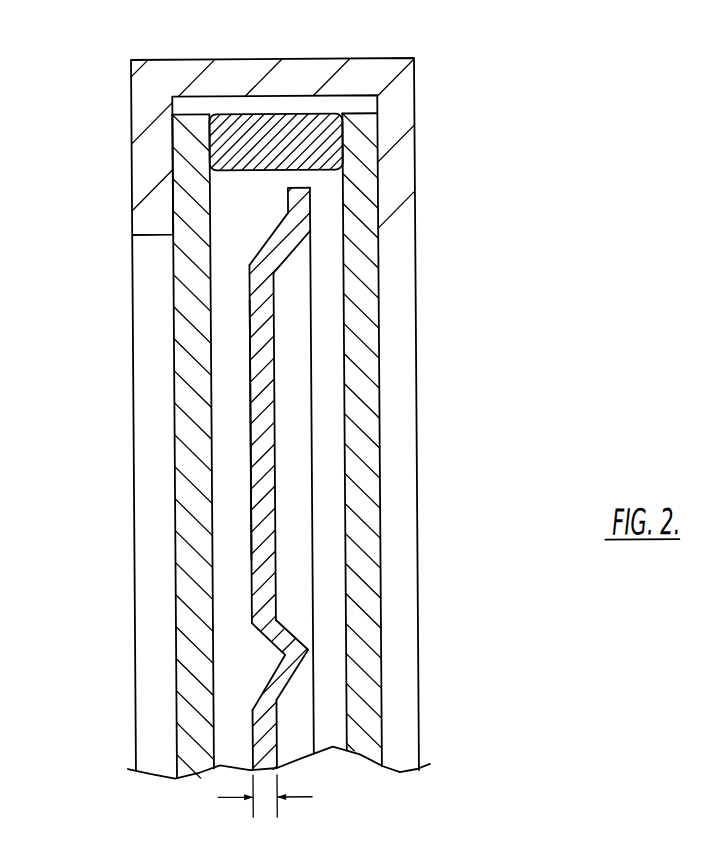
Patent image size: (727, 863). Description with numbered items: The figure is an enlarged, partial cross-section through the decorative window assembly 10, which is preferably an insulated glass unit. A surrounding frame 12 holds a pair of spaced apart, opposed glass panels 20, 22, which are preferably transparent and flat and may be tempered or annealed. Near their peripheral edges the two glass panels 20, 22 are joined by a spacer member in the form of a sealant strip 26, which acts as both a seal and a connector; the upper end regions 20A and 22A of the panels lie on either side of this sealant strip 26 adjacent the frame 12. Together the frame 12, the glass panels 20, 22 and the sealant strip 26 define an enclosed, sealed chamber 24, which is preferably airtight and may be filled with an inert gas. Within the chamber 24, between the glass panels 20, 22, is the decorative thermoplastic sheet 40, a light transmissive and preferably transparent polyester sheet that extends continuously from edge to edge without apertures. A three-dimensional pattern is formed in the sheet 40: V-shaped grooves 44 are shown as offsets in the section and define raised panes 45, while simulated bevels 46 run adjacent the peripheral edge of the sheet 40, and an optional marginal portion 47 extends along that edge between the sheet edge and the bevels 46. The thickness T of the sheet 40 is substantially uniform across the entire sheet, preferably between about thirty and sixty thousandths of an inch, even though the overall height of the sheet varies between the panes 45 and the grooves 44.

The decorative window assembly 10 is at (574, 292).
The frame 12 is at (402, 98).
The glass panel 20 is at (192, 438).
The upper end of inner sleeve 20A is at (183, 115).
The glass panel 22 is at (365, 422).
The upper end of outer sleeve 22A is at (362, 114).
The chamber 24 is at (242, 197).
The sealant strip 26 is at (322, 122).
The decorative thermoplastic sheet 40 is at (310, 313).
The V-shaped grooves 44 is at (268, 651).
The raised panes 45 is at (247, 355).
The simulated bevels 46 is at (267, 243).
The marginal portion 47 is at (296, 203).
The thickness T is at (230, 798).